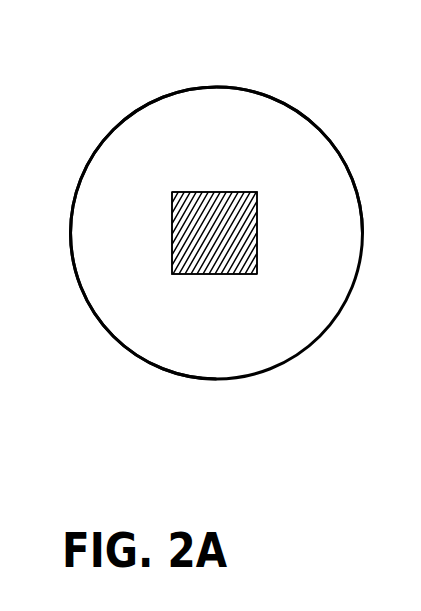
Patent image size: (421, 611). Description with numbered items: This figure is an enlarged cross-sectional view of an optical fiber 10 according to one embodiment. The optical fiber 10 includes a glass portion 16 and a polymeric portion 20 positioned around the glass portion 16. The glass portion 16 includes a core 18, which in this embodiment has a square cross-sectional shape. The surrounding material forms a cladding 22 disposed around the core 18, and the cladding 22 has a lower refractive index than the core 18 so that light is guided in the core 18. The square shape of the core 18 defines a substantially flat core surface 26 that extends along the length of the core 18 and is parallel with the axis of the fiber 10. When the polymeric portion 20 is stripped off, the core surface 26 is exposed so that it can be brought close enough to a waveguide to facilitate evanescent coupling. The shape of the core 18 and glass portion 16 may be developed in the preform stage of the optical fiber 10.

The optical fiber 10 is at (302, 110).
The glass portion 16 is at (230, 192).
The core 18 is at (203, 208).
The polymeric portion 20 is at (106, 239).
The cladding 22 is at (156, 142).
The core surface 26 is at (202, 275).